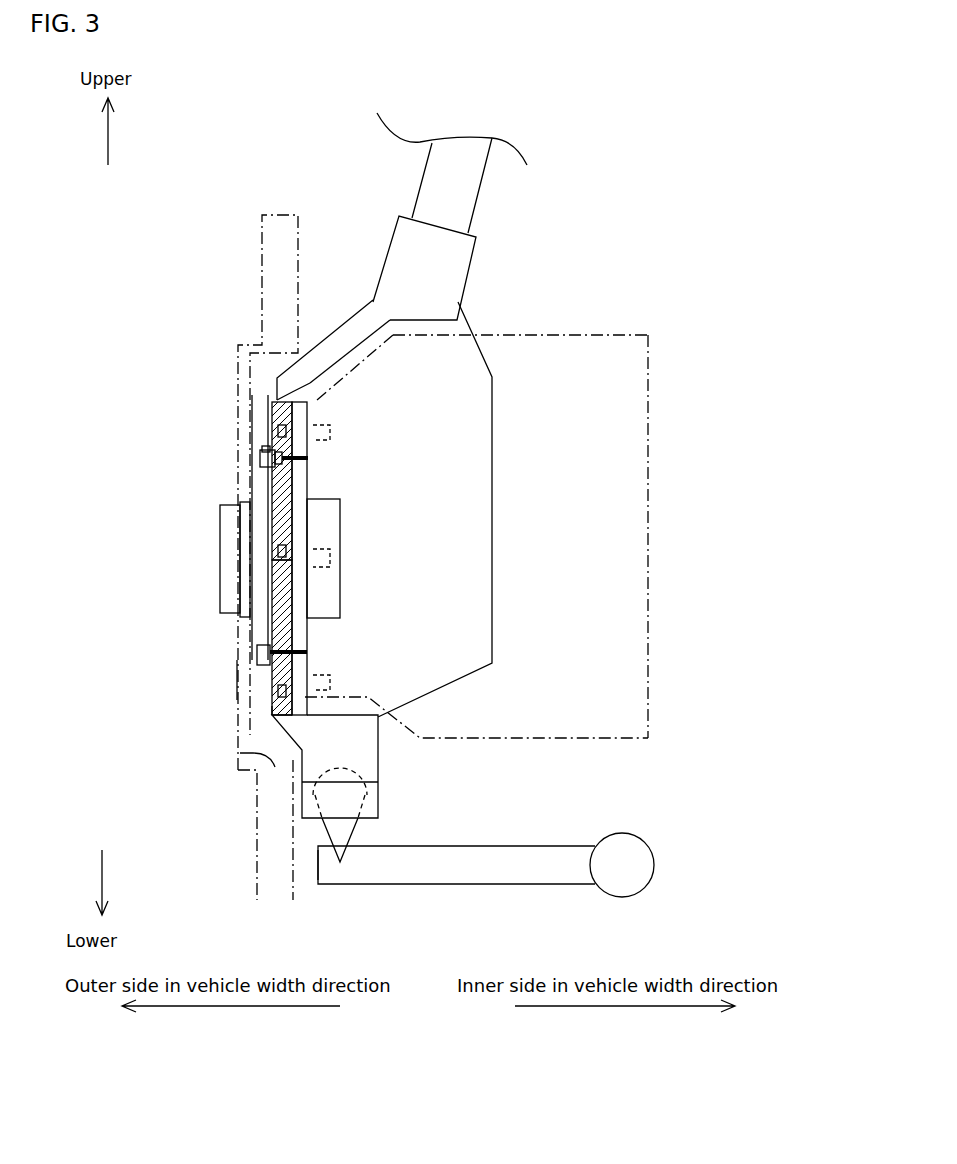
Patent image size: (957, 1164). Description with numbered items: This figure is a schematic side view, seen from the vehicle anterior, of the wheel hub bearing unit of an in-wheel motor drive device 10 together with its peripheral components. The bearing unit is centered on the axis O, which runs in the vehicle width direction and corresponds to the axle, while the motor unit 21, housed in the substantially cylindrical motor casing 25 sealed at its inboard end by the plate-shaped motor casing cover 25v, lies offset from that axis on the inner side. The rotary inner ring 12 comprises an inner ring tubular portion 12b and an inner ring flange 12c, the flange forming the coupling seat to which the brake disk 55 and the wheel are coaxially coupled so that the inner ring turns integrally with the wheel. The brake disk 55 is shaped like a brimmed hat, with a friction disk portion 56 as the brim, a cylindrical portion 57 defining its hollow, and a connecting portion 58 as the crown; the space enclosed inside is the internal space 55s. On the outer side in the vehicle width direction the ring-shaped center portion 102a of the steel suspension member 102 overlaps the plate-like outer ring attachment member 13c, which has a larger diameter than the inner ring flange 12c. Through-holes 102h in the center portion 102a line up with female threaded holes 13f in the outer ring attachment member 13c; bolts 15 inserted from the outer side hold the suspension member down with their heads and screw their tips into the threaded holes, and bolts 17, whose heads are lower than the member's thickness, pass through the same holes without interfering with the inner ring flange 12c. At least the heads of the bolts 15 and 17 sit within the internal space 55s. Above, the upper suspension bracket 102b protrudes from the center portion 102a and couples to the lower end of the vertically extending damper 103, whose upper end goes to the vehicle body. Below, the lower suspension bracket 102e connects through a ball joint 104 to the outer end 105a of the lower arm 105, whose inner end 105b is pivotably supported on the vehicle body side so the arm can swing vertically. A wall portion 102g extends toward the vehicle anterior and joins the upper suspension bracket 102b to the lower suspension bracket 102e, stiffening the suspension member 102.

The in-wheel motor drive device 10 is at (678, 299).
The inner ring 12 is at (206, 610).
The inner ring tubular portion 12b is at (332, 523).
The inner ring flange 12c is at (258, 634).
The outer ring attachment member 13c is at (285, 705).
The female threaded holes 13f is at (283, 487).
The bolts 15 is at (262, 466).
The bolts 17 is at (275, 433).
The motor unit 21 is at (663, 357).
The motor casing 25 is at (593, 335).
The motor casing cover 25v is at (650, 404).
The brake disk 55 is at (281, 903).
The internal space 55s is at (280, 746).
The friction disk portion 56 is at (268, 795).
The cylindrical portion 57 is at (240, 753).
The connecting portion 58 is at (237, 671).
The suspension member 102 is at (352, 302).
The center portion 102a is at (292, 405).
The upper suspension bracket 102b is at (465, 258).
The lower suspension bracket 102e is at (372, 766).
The wall portion 102g is at (472, 598).
The through-holes 102h is at (262, 450).
The damper 103 is at (470, 191).
The ball joint 104 is at (372, 800).
The lower arm 105 is at (461, 898).
The outer end 105a is at (338, 878).
The inner end 105b is at (620, 886).
The axis O is at (205, 557).